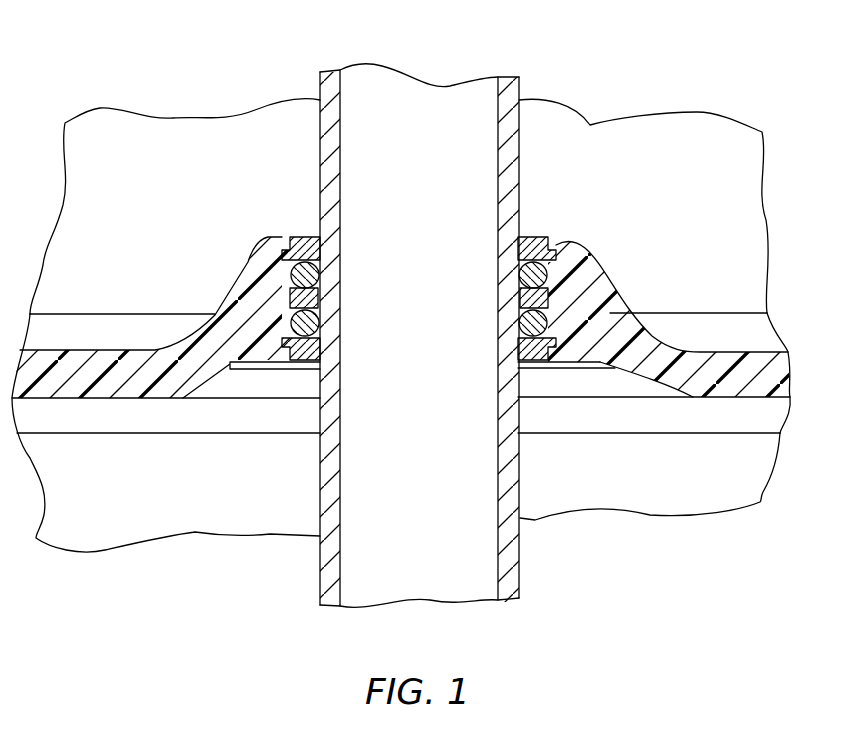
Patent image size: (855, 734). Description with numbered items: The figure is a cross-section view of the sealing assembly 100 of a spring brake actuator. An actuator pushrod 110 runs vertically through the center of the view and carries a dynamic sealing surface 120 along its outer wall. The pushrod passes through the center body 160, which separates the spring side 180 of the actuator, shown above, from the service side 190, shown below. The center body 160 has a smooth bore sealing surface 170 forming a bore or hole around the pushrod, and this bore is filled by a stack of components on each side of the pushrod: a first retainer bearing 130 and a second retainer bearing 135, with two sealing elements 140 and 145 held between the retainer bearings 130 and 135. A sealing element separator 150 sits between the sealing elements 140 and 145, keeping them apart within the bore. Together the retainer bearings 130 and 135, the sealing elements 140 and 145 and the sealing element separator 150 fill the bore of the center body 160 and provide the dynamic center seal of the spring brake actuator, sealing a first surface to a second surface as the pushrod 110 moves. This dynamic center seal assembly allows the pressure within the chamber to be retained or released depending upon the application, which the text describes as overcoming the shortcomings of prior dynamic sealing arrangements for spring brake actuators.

The sealing assembly 100 is at (310, 72).
The actuator pushrod 110 is at (442, 84).
The dynamic sealing surface 120 is at (522, 132).
The retainer bearing 130 is at (530, 240).
The retainer bearing 135 is at (528, 362).
The sealing element 140 is at (578, 280).
The sealing element 145 is at (550, 308).
The sealing element separator 150 is at (593, 290).
The center body 160 is at (720, 362).
The smooth bore sealing surface 170 is at (535, 362).
The spring side 180 is at (200, 219).
The service side 190 is at (212, 486).